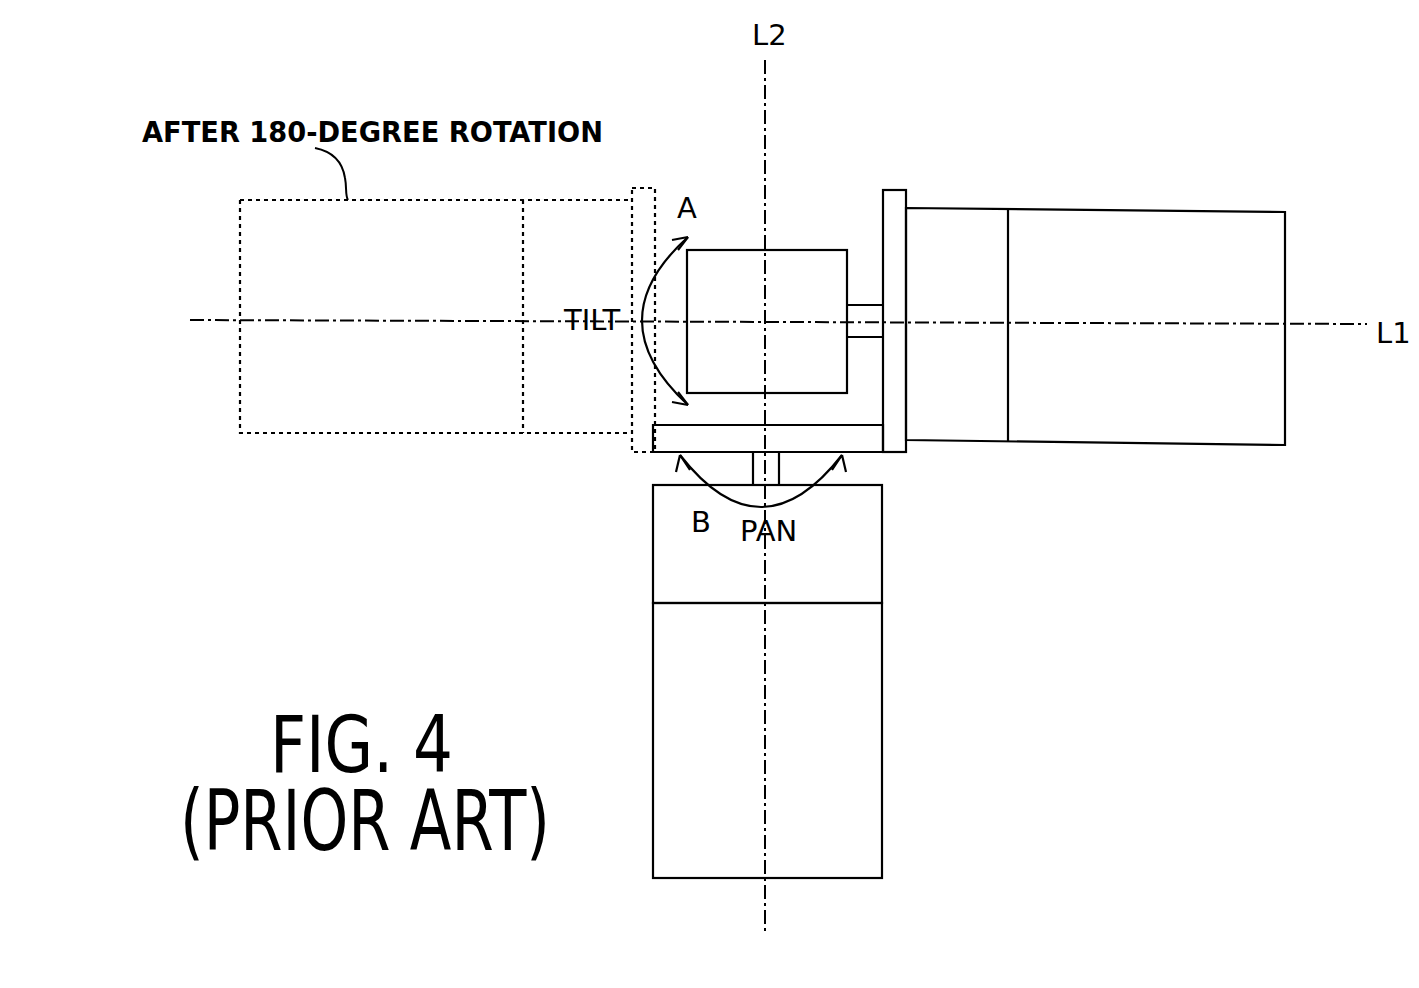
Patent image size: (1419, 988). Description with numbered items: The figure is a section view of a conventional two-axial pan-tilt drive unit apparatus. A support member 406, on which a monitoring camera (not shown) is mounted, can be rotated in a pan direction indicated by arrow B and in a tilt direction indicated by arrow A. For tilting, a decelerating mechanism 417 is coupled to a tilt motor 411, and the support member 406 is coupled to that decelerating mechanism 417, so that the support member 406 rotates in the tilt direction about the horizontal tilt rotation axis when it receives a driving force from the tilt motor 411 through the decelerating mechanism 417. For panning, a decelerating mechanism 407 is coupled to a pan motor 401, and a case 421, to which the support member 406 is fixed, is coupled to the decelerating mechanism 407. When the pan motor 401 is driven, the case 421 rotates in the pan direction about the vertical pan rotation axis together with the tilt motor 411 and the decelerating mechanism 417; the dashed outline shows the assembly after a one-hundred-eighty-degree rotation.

The pan motor 401 is at (882, 660).
The support member 406 is at (803, 250).
The decelerating mechanism 407 is at (882, 540).
The tilt motor 411 is at (1207, 222).
The decelerating mechanism 417 is at (945, 220).
The case 421 is at (905, 453).